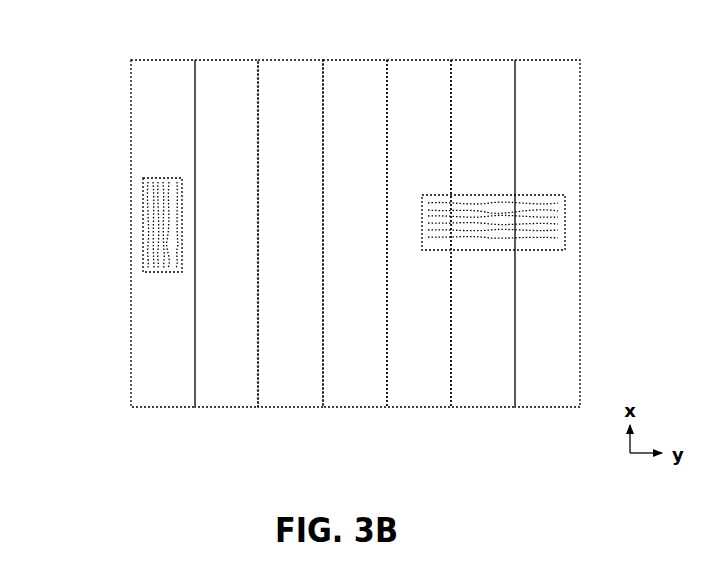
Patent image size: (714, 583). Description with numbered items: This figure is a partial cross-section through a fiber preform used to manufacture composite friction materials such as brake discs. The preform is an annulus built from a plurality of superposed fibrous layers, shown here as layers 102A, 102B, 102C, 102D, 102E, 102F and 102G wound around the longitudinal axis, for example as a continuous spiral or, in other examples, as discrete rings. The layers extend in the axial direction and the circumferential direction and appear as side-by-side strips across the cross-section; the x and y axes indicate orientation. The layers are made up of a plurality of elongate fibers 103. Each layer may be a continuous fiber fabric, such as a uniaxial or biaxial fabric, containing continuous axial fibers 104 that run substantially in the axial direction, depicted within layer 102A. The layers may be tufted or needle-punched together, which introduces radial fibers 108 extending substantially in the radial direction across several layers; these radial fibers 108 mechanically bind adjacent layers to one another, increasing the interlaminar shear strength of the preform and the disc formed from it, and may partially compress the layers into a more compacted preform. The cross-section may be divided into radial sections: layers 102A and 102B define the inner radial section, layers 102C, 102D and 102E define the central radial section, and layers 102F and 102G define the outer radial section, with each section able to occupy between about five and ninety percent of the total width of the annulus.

The fibrous layer 102A is at (152, 66).
The fibrous layer 102B is at (225, 402).
The fibrous layer 102C is at (288, 66).
The fibrous layer 102D is at (352, 402).
The fibrous layer 102E is at (418, 66).
The fibrous layer 102F is at (486, 402).
The fibrous layer 102G is at (553, 66).
The elongate fibers 103 is at (137, 167).
The continuous axial fibers 104 is at (145, 207).
The radial fibers 108 is at (555, 223).